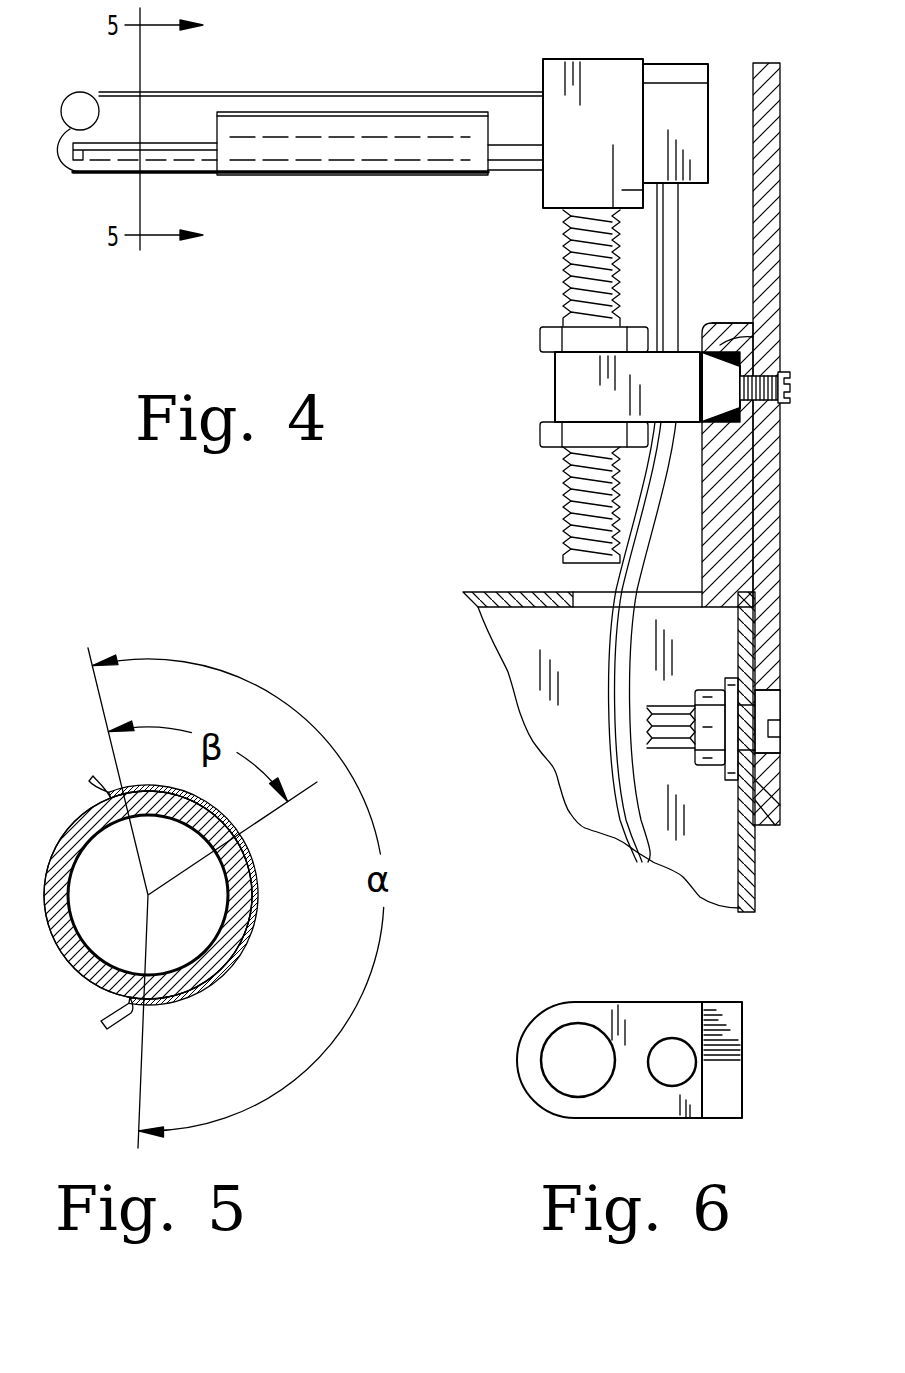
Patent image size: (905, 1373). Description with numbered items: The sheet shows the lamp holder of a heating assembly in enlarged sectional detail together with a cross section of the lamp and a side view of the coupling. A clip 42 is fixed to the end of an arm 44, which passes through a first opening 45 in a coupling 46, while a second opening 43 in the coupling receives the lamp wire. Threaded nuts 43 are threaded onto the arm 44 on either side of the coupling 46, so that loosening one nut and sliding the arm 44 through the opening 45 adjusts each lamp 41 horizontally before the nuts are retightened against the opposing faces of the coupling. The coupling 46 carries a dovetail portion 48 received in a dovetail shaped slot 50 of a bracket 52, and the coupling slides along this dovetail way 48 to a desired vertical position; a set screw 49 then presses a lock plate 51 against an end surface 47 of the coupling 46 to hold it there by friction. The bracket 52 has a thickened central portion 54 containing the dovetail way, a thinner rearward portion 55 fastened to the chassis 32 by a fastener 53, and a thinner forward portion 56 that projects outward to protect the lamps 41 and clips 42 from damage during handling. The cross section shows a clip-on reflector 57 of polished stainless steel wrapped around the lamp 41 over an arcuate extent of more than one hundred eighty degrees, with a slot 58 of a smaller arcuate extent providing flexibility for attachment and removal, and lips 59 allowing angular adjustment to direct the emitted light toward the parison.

In FIG. 4, the chassis 32 is at (773, 805).
In FIG. 4, the lamp 41 is at (418, 100).
In FIG. 5, the lamp 41 is at (75, 975).
In FIG. 4, the clip 42 is at (623, 78).
In FIG. 4, the threaded nut 43 is at (545, 333).
In FIG. 6, the threaded nut 43 is at (660, 1075).
In FIG. 4, the arm 44 is at (565, 268).
In FIG. 6, the first opening 45 is at (570, 1052).
In FIG. 4, the coupling 46 is at (565, 385).
In FIG. 6, the coupling 46 is at (645, 1015).
In FIG. 6, the end surface 47 is at (762, 1048).
In FIG. 4, the dovetail portion 48 is at (718, 375).
In FIG. 6, the dovetail portion 48 is at (722, 1088).
In FIG. 4, the set screw 49 is at (793, 385).
In FIG. 4, the dovetail shaped slot 50 is at (745, 415).
In FIG. 4, the lock plate 51 is at (760, 335).
In FIG. 4, the bracket 52 is at (768, 565).
In FIG. 4, the fastener 53 is at (770, 752).
In FIG. 4, the thickened central portion 54 is at (768, 495).
In FIG. 4, the rearward portion 55 is at (765, 638).
In FIG. 4, the forward portion 56 is at (770, 108).
In FIG. 4, the clip-on reflector 57 is at (385, 150).
In FIG. 5, the clip-on reflector 57 is at (210, 990).
In FIG. 4, the slot 58 is at (190, 100).
In FIG. 5, the slot 58 is at (120, 790).
In FIG. 4, the lip 59 is at (283, 110).
In FIG. 5, the lip 59 is at (115, 1035).